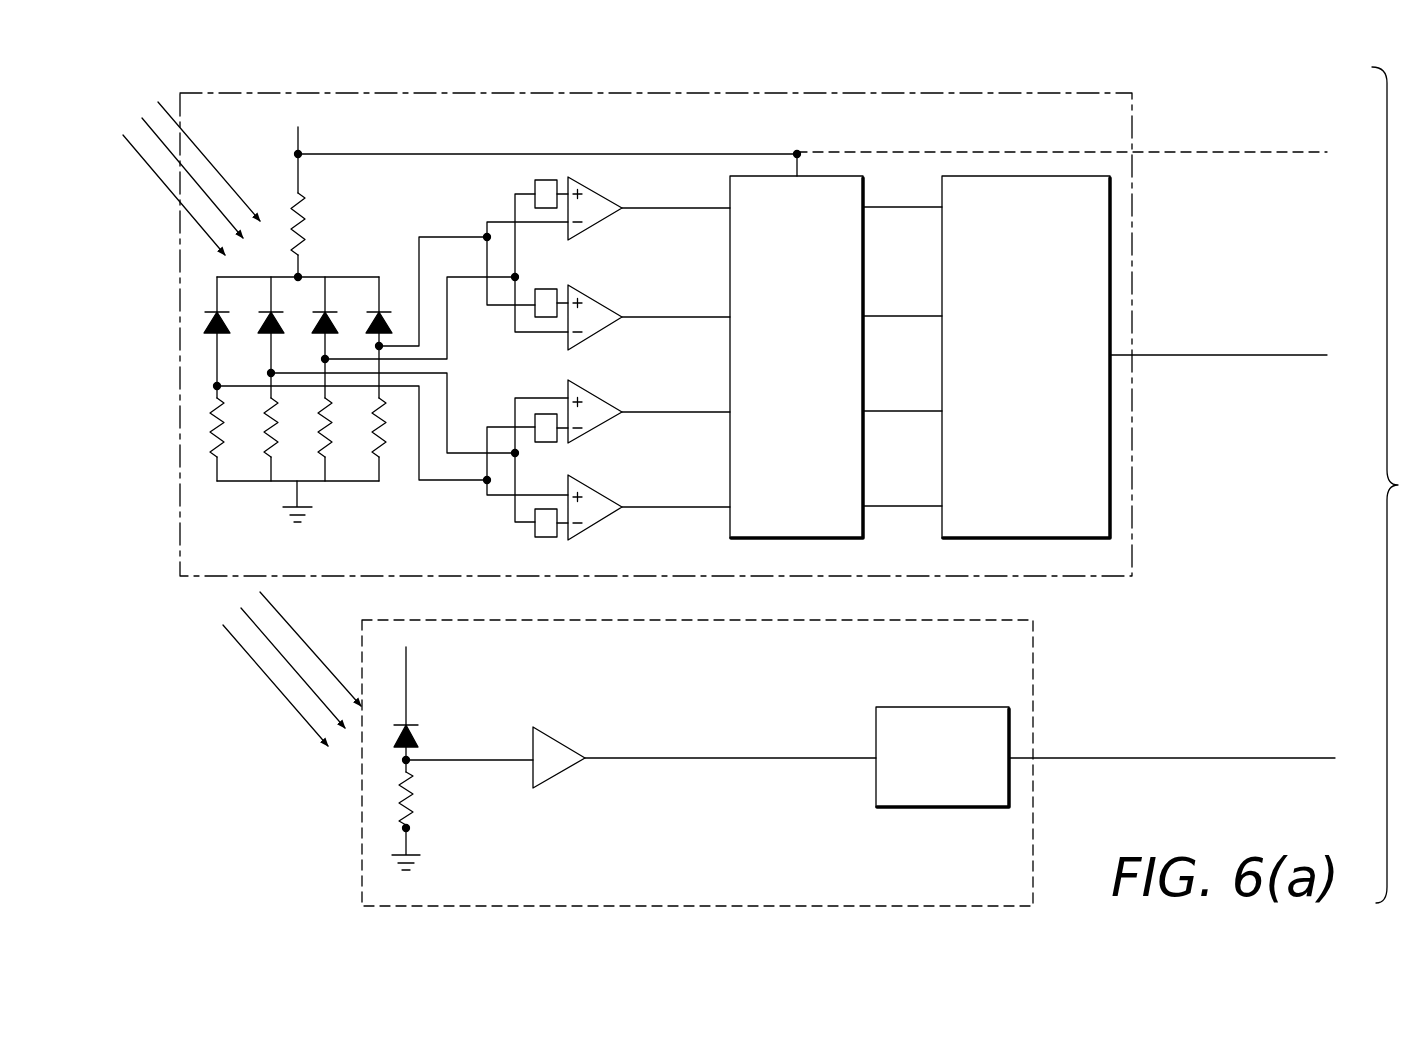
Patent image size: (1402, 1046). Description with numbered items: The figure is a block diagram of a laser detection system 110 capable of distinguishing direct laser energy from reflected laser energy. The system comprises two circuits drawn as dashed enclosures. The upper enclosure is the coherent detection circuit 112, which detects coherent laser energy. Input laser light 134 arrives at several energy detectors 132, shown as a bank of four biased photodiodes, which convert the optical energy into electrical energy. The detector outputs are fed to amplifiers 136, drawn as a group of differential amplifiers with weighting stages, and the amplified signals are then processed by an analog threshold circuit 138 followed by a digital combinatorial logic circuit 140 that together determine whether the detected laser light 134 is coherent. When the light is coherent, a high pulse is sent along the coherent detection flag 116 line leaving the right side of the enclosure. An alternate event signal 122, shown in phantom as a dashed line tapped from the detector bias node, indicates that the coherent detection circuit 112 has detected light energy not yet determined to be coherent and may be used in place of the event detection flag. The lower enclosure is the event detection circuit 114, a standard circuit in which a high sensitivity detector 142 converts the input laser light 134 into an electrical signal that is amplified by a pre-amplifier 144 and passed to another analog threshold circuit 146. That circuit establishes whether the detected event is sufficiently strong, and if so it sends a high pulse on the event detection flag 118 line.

The laser detection system 110 is at (1266, 111).
The coherent detection circuit 112 is at (614, 92).
The event detection circuit 114 is at (1050, 696).
The coherent detection flag 116 is at (1185, 355).
The event detection flag 118 is at (1195, 758).
The alternate event signal 122 is at (1167, 151).
The energy detectors 132 is at (357, 262).
The laser light 134 is at (203, 156).
The amplifiers 136 is at (611, 230).
The analog threshold circuit 138 is at (842, 176).
The digital combinatorial logic circuit 140 is at (1002, 176).
The high sensitivity detector 142 is at (418, 741).
The pre-amplifier 144 is at (568, 745).
The analog threshold circuit 146 is at (918, 707).